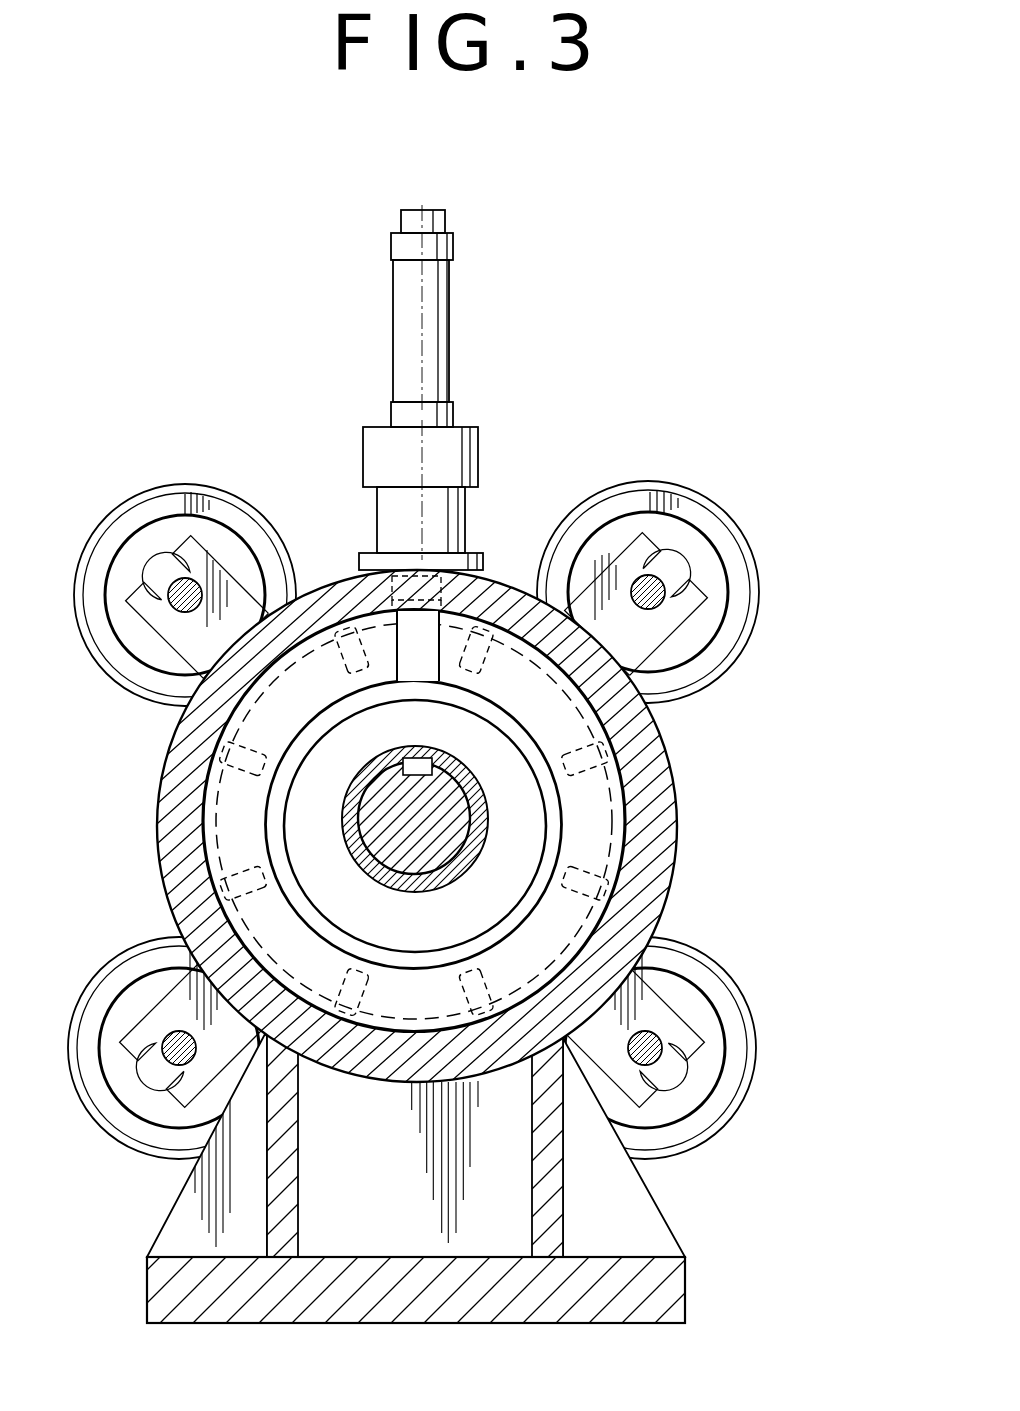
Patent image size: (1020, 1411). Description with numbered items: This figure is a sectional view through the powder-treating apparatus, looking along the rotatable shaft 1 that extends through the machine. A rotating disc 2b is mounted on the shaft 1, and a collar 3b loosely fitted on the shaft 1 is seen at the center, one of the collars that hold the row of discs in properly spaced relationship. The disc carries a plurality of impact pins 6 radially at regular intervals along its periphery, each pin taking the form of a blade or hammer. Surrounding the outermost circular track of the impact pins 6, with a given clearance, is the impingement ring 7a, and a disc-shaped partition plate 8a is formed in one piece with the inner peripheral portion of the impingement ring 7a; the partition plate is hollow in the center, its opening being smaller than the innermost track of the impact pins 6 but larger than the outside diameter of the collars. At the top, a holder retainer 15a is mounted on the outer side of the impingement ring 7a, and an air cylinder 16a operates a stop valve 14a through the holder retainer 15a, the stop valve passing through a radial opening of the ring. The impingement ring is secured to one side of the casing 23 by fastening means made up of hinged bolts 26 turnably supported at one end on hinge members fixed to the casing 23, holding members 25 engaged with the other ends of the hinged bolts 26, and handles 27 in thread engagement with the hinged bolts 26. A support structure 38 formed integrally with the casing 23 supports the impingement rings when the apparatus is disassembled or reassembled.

The rotatable shaft 1 is at (378, 827).
The rotating disc 2b is at (309, 866).
The collar 3b is at (345, 792).
The impact pins 6 is at (575, 768).
The impingement ring 7a is at (658, 849).
The partition plate 8a is at (585, 853).
The stop valve 14a is at (407, 640).
The holder retainer 15a is at (463, 516).
The air cylinder 16a is at (449, 318).
The casing 23 is at (663, 1297).
The holding member 25 is at (680, 697).
The hinged bolt 26 is at (640, 643).
The handle 27 is at (732, 550).
The support structure 38 is at (627, 1217).